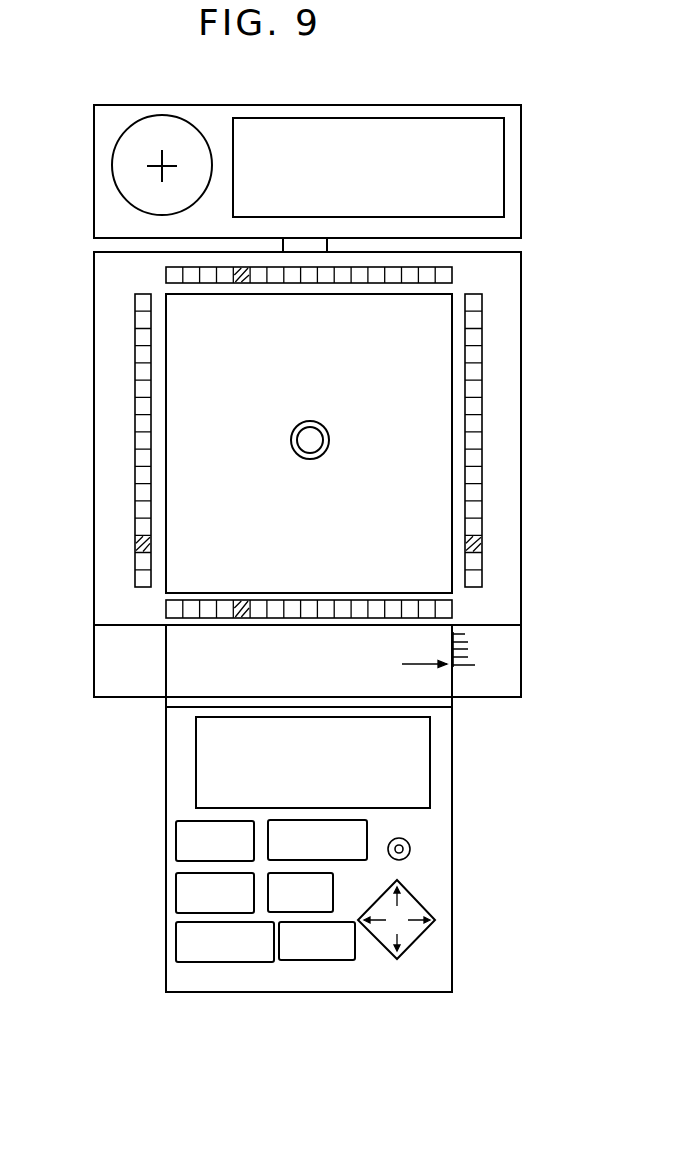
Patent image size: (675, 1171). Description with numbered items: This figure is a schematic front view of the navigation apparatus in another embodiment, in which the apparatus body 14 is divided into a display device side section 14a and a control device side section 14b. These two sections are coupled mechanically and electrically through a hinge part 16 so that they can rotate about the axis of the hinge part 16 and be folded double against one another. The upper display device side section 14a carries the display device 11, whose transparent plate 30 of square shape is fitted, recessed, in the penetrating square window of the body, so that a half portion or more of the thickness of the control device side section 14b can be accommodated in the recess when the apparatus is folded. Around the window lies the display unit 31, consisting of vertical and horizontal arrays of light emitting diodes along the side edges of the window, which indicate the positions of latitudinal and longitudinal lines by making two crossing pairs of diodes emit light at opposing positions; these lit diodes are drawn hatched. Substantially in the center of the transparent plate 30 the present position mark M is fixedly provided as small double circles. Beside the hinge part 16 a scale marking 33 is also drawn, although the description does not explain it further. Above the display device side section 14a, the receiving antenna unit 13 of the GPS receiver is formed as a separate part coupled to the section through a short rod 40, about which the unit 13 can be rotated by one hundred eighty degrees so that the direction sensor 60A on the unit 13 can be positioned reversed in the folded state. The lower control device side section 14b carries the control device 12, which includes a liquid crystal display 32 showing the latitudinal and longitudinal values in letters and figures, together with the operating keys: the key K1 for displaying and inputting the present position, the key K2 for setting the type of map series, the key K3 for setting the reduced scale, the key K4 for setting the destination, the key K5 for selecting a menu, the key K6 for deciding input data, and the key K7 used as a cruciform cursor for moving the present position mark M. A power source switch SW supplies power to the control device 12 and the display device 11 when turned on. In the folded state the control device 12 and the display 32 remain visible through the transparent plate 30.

The direction sensor 60A is at (180, 118).
The short rod 40 is at (305, 245).
The receiving antenna unit 13 is at (463, 128).
The apparatus body 14 is at (112, 303).
The display device side section 14a is at (112, 510).
The control device side section 14b is at (240, 985).
The display device 11 is at (492, 347).
The display unit 31 is at (448, 274).
The transparent plate 30 is at (433, 555).
The present position mark M is at (329, 440).
The hinge part 16 is at (112, 670).
The scale indicator 33 is at (485, 652).
The control device 12 is at (173, 976).
The display 32 is at (430, 770).
The key K1 is at (176, 847).
The key K2 is at (176, 895).
The key K3 is at (176, 945).
The key K4 is at (367, 860).
The key K5 is at (330, 912).
The key K6 is at (312, 960).
The key K7 is at (420, 938).
The power source switch SW is at (410, 848).